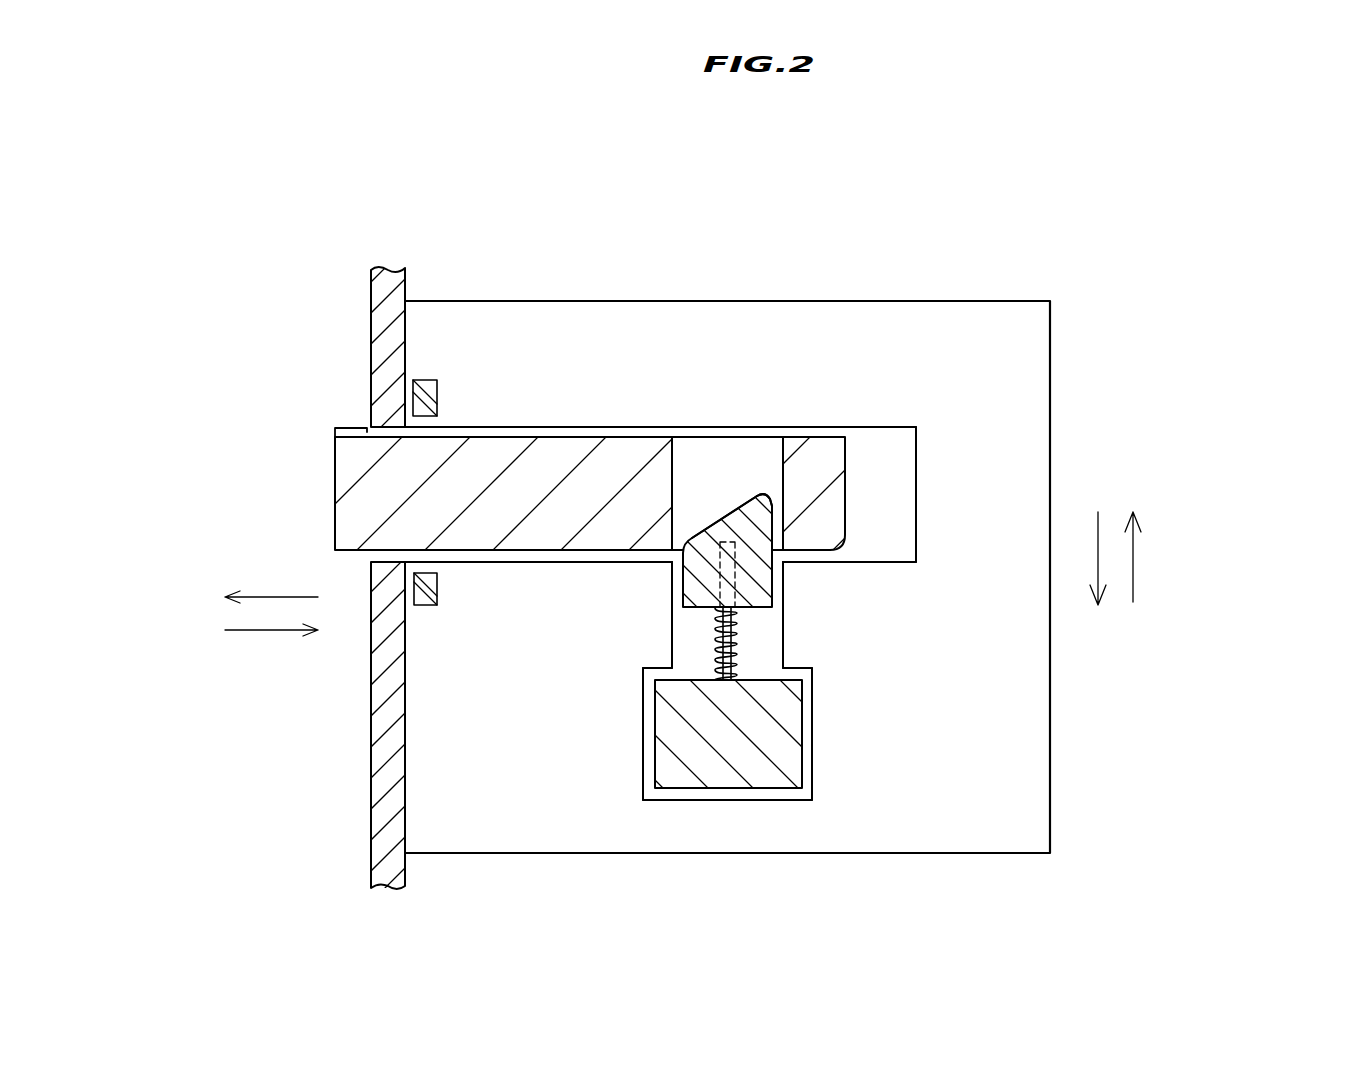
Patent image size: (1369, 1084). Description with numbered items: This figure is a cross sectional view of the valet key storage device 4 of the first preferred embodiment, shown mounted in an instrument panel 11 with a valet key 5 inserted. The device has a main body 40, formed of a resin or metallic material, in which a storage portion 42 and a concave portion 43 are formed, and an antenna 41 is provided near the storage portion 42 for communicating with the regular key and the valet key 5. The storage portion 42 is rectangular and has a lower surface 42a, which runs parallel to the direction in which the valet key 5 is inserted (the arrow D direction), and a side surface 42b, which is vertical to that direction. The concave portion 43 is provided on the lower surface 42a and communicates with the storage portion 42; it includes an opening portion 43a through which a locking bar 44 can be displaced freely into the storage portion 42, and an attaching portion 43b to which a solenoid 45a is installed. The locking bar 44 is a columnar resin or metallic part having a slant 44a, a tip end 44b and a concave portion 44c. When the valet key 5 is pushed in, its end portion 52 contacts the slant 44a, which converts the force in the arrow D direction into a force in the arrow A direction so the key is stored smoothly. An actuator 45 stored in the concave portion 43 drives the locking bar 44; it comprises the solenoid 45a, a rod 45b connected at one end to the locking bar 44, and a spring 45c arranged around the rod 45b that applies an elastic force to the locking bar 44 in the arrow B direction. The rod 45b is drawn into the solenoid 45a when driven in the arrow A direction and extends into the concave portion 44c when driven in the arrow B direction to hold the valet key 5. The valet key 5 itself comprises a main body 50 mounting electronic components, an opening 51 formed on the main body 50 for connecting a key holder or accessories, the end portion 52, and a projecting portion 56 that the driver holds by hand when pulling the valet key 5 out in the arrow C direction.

The valet key storage device 4 is at (1031, 276).
The valet key 5 is at (321, 505).
The instrument panel 11 is at (372, 309).
The main body 40 is at (1033, 379).
The antenna 41 is at (428, 380).
The storage portion 42 is at (488, 427).
The lower surface 42a is at (892, 562).
The side surface 42b is at (916, 463).
The concave portion 43 is at (837, 674).
The opening portion 43a is at (778, 620).
The attaching portion 43b is at (813, 730).
The locking bar 44 is at (683, 600).
The slant 44a is at (731, 506).
The tip end 44b is at (763, 497).
The concave portion 44c is at (737, 568).
The actuator 45 is at (696, 817).
The solenoid 45a is at (777, 760).
The rod 45b is at (737, 648).
The spring 45c is at (712, 646).
The main body 50 is at (345, 540).
The opening 51 is at (677, 460).
The end portion 52 is at (858, 458).
The projecting portion 56 is at (350, 414).